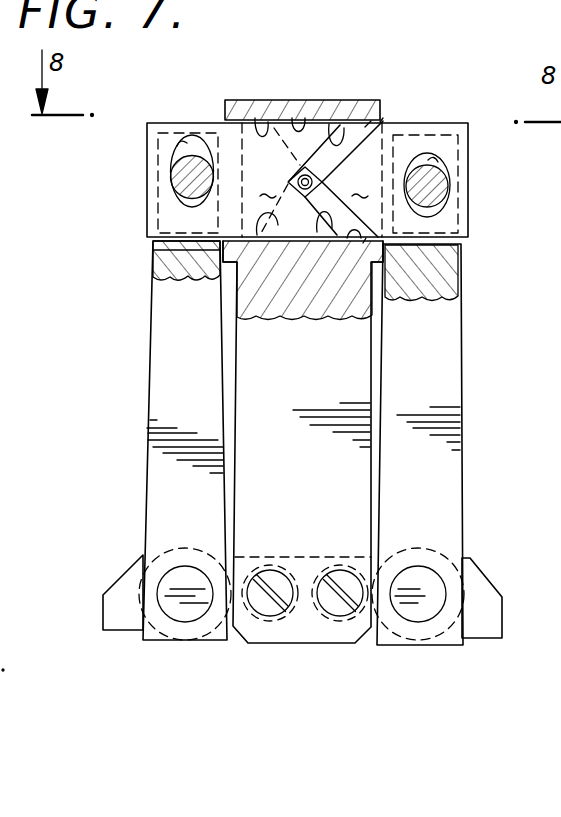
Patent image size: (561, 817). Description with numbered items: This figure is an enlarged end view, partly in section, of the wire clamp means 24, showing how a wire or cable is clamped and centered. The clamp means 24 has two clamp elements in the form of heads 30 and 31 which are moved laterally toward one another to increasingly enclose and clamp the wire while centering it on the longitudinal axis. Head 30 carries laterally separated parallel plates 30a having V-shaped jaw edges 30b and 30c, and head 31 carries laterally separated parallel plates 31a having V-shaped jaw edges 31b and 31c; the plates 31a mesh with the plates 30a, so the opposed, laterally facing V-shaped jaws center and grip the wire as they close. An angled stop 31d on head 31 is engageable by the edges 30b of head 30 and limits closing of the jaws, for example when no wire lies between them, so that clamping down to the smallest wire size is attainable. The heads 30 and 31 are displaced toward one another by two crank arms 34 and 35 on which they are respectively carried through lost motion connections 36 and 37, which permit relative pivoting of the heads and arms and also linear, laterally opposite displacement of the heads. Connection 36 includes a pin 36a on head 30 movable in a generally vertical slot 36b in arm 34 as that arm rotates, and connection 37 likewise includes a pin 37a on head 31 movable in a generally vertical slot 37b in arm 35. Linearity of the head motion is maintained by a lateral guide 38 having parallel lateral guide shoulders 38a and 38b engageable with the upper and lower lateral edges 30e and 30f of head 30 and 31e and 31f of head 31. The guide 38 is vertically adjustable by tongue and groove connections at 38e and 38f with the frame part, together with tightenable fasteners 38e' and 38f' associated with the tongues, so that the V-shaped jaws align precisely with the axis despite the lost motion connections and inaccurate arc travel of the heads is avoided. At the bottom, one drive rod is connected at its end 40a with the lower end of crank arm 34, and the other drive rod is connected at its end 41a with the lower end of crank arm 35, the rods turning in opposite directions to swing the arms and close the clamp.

The clamp means 24 is at (452, 96).
The head 30 is at (254, 157).
The parallel plates 30a is at (268, 185).
The V-shaped jaw edge 30b is at (332, 126).
The V-shaped jaw edge 30c is at (300, 294).
The upper lateral edge 30e is at (256, 112).
The lower lateral edge 30f is at (218, 244).
The head 31 is at (363, 162).
The parallel plates 31a is at (362, 185).
The V-shaped jaw edge 31b is at (257, 104).
The V-shaped jaw edge 31c is at (303, 280).
The angled stop 31d is at (365, 127).
The upper lateral edge 31e is at (383, 118).
The lower lateral edge 31f is at (390, 274).
The crank arm 34 is at (152, 400).
The crank arm 35 is at (447, 365).
The lost motion connection 36 is at (162, 190).
The pin 36a is at (173, 172).
The vertical slot 36b is at (186, 144).
The lost motion connection 37 is at (449, 169).
The pin 37a is at (443, 193).
The vertical slot 37b is at (428, 160).
The lateral guide 38 is at (232, 309).
The lateral guide shoulder 38a is at (303, 102).
The lateral guide shoulder 38b is at (363, 243).
The tongue and groove connection 38e is at (270, 562).
The tightenable fastener 38e' is at (270, 635).
The tongue and groove connection 38f is at (328, 540).
The tightenable fastener 38f' is at (343, 639).
The rod end 40a is at (178, 608).
The rod end 41a is at (428, 610).